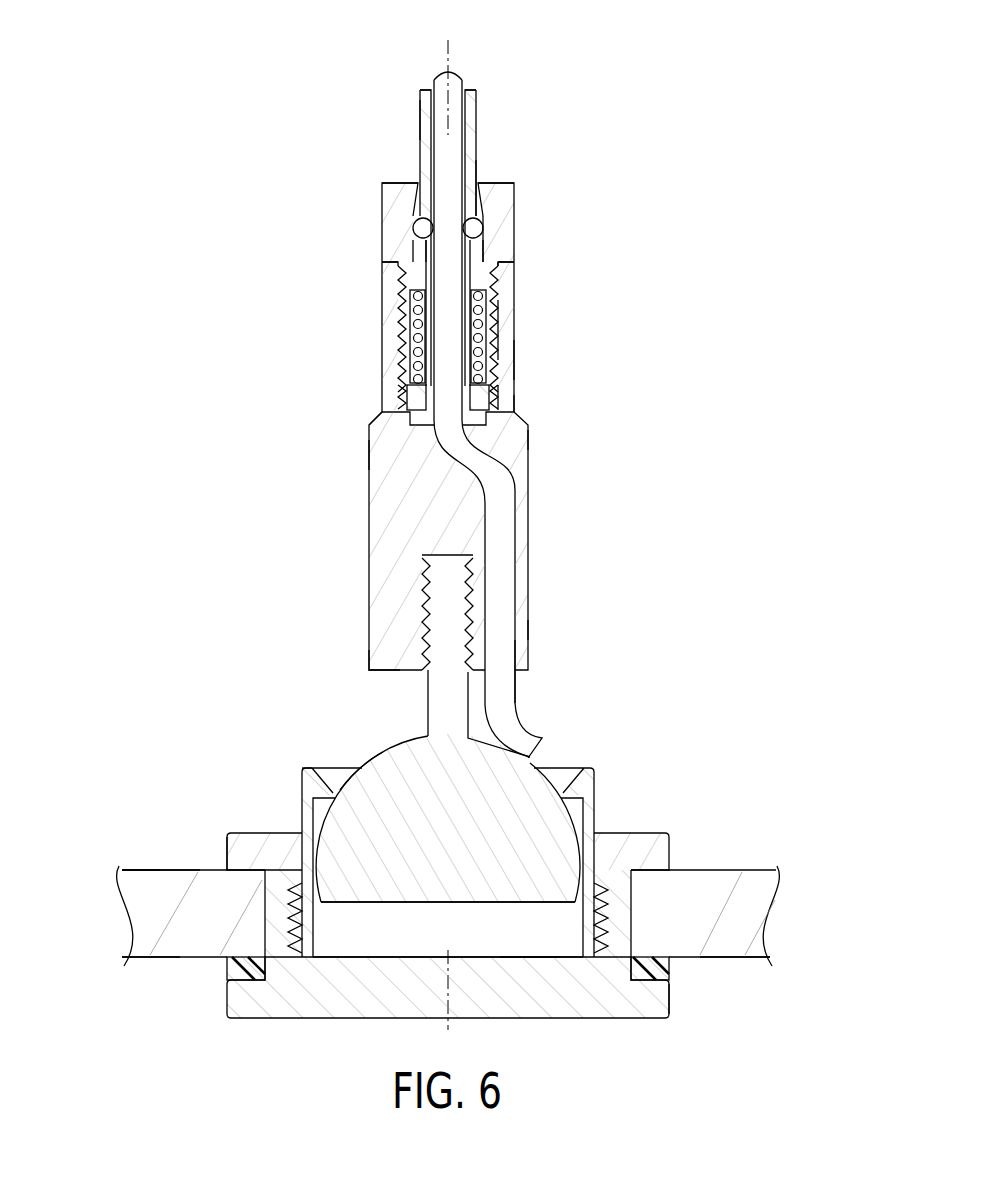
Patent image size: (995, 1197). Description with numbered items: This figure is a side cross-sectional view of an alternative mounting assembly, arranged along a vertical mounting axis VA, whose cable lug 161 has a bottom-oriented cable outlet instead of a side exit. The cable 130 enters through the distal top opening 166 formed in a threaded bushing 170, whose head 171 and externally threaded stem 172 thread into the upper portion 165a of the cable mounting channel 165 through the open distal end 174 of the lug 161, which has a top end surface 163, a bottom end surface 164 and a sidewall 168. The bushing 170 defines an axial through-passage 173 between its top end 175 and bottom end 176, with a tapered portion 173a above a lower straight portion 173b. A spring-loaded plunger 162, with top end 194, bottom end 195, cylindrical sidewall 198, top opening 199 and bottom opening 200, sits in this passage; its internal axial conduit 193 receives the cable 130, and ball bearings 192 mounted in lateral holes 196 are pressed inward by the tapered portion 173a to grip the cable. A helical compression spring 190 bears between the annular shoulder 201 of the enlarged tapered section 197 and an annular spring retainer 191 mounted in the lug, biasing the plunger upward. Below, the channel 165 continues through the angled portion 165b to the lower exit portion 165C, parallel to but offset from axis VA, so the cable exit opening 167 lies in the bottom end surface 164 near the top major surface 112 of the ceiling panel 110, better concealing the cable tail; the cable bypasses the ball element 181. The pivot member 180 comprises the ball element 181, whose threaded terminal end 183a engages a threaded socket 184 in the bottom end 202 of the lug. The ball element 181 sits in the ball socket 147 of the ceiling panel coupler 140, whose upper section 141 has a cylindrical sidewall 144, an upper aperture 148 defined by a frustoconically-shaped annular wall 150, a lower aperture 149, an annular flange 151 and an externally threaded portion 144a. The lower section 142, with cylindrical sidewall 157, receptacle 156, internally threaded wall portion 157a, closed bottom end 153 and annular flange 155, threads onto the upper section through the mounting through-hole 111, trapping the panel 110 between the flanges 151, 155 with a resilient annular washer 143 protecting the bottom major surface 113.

The vertical mounting axis VA is at (450, 56).
The ceiling panel 110 is at (733, 882).
The mounting through-hole 111 is at (263, 910).
The top major surface 112 is at (153, 868).
The bottom major surface 113 is at (140, 960).
The cable 130 is at (455, 82).
The ceiling panel coupler 140 is at (678, 828).
The upper section 141 is at (284, 773).
The lower section 142 is at (222, 1024).
The resilient annular washer 143 is at (672, 970).
The cylindrical sidewall 144 is at (596, 806).
The externally threaded portion 144a is at (632, 924).
The ball socket 147 is at (377, 946).
The upper aperture 148 is at (594, 770).
The lower aperture 149 is at (589, 942).
The frustoconically-shaped annular wall 150 is at (312, 767).
The annular flange 151 is at (233, 832).
The bottom end 153 is at (652, 985).
The annular flange 155 is at (224, 998).
The receptacle 156 is at (546, 957).
The cylindrical sidewall 157 is at (630, 887).
The internally threaded wall portion 157a is at (604, 935).
The cable lug 161 is at (536, 367).
The spring-loaded plunger 162 is at (481, 116).
The top end surface 163 is at (388, 172).
The bottom end surface 164 is at (520, 676).
The cable mounting channel 165 is at (503, 440).
The upper portion 165a is at (500, 308).
The angled portion 165b is at (488, 438).
The lower exit portion 165C is at (512, 630).
The distal top opening 166 is at (477, 180).
The cable exit opening 167 is at (517, 700).
The sidewall 168 is at (505, 392).
The threaded bushing 170 is at (373, 200).
The head 171 is at (420, 252).
The externally threaded stem 172 is at (386, 298).
The axial through-passage 173 is at (396, 372).
The tapered portion 173a is at (482, 208).
The lower straight portion 173b is at (480, 328).
The open distal end 174 is at (423, 270).
The top end 175 is at (503, 182).
The bottom end 176 is at (407, 400).
The pivot member 180 is at (383, 752).
The ball element 181 is at (566, 772).
The threaded terminal end 183a is at (447, 600).
The threaded socket 184 is at (468, 575).
The helical compression spring 190 is at (484, 350).
The annular spring retainer 191 is at (400, 404).
The ball bearings 192 is at (413, 228).
The internal axial conduit 193 is at (408, 390).
The top end 194 is at (420, 88).
The bottom end 195 is at (520, 398).
The lateral hole 196 is at (478, 230).
The tapered section 197 is at (386, 263).
The cylindrical sidewall 198 is at (412, 118).
The top opening 199 is at (463, 85).
The bottom opening 200 is at (416, 426).
The annular shoulder 201 is at (488, 282).
The bottom end 202 is at (386, 672).